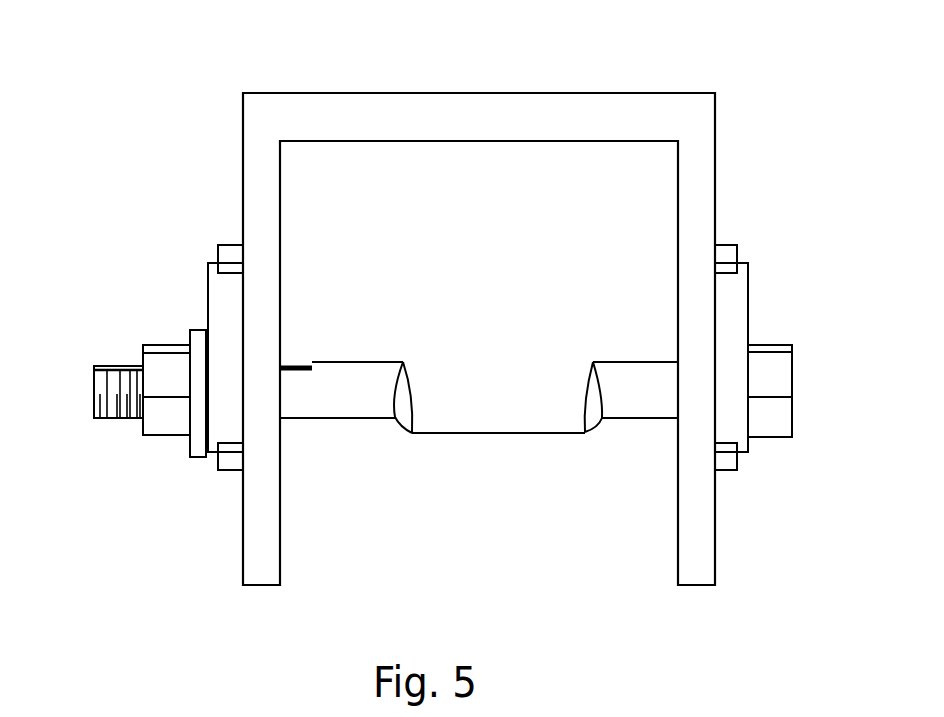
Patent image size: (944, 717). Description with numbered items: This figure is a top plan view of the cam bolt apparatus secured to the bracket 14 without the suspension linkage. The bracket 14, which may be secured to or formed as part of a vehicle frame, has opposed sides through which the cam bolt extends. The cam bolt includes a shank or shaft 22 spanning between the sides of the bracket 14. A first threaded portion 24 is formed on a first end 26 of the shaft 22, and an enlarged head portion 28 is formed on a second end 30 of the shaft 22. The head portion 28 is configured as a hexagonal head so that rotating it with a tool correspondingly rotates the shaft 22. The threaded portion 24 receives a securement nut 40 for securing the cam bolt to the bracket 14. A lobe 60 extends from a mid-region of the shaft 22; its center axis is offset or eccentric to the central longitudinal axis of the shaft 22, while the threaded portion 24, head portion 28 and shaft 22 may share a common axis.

The bracket 14 is at (462, 109).
The shaft 22 is at (352, 398).
The first threaded portion 24 is at (115, 377).
The first end 26 is at (93, 390).
The enlarged head portion 28 is at (762, 363).
The second end 30 is at (792, 378).
The securement nut 40 is at (173, 422).
The lobe 60 is at (466, 378).